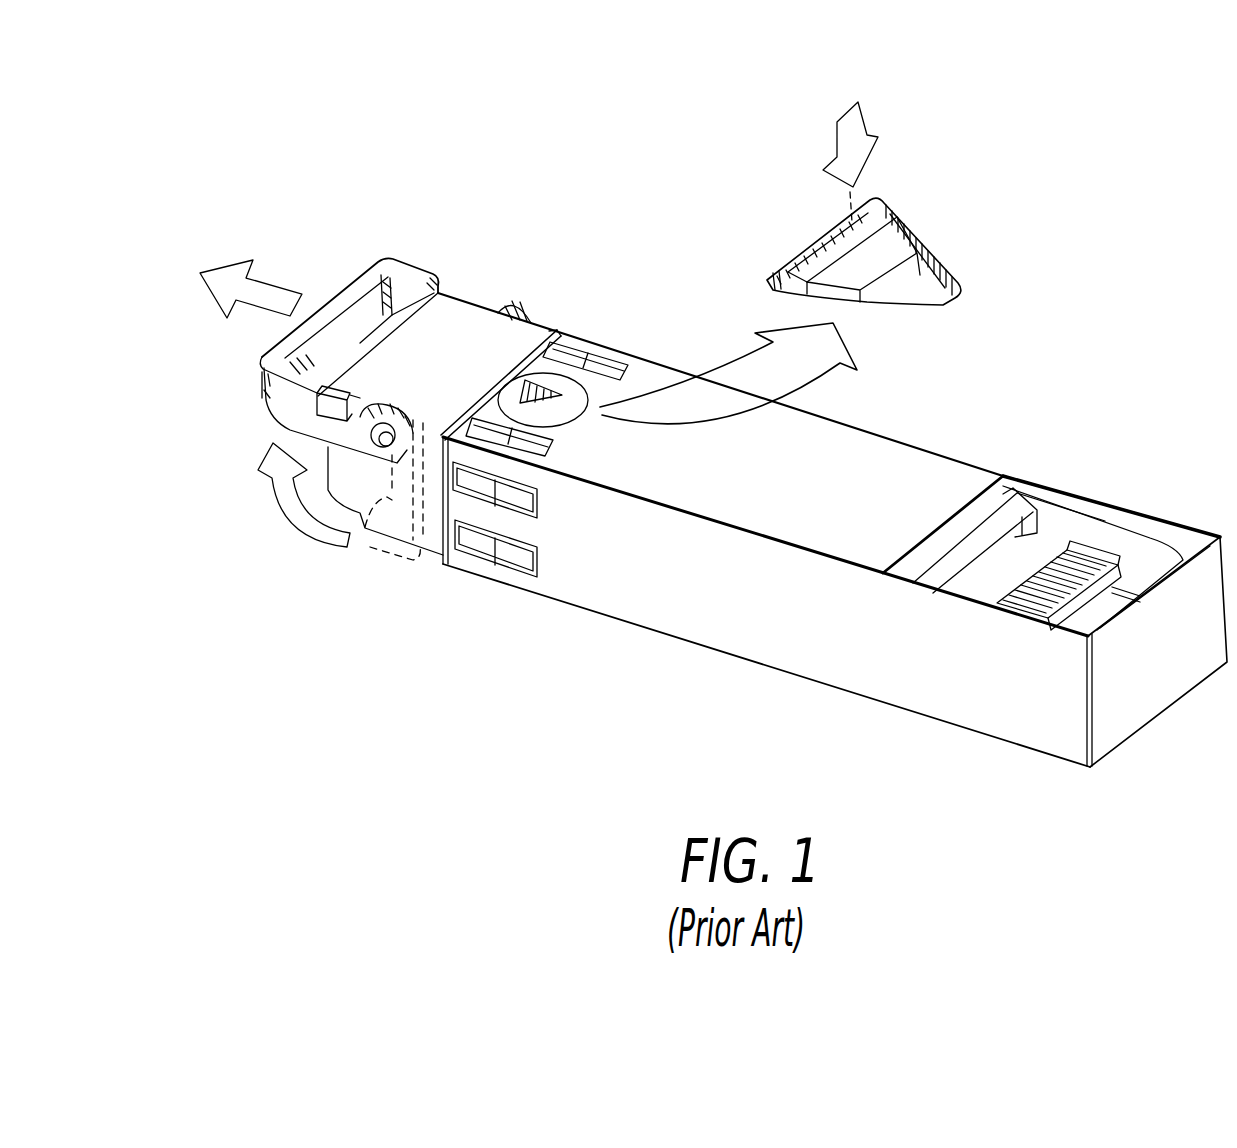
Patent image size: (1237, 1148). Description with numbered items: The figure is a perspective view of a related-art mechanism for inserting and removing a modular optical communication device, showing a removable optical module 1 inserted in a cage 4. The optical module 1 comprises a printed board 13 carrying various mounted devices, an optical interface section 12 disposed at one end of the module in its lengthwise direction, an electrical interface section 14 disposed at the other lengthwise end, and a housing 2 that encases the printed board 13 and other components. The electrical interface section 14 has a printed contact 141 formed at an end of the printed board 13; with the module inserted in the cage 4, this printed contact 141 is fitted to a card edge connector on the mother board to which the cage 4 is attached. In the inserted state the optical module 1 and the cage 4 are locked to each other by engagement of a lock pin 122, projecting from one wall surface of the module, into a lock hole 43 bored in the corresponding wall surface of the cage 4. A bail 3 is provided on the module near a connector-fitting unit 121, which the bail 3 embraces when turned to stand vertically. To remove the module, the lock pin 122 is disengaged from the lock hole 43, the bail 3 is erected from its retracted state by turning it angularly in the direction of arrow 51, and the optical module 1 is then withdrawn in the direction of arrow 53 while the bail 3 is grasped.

The optical module 1 is at (487, 143).
The optical interface section 12 is at (540, 268).
The connector-fitting unit 121 is at (437, 532).
The lock pin 122 is at (830, 252).
The electrical interface section 14 is at (1131, 383).
The printed contact 141 is at (1083, 567).
The printed board 13 is at (1018, 570).
The housing 2 is at (980, 482).
The bail 3 is at (357, 266).
The cage 4 is at (935, 202).
The lock hole 43 is at (955, 282).
The arrow 51 is at (281, 518).
The arrow 53 is at (237, 302).